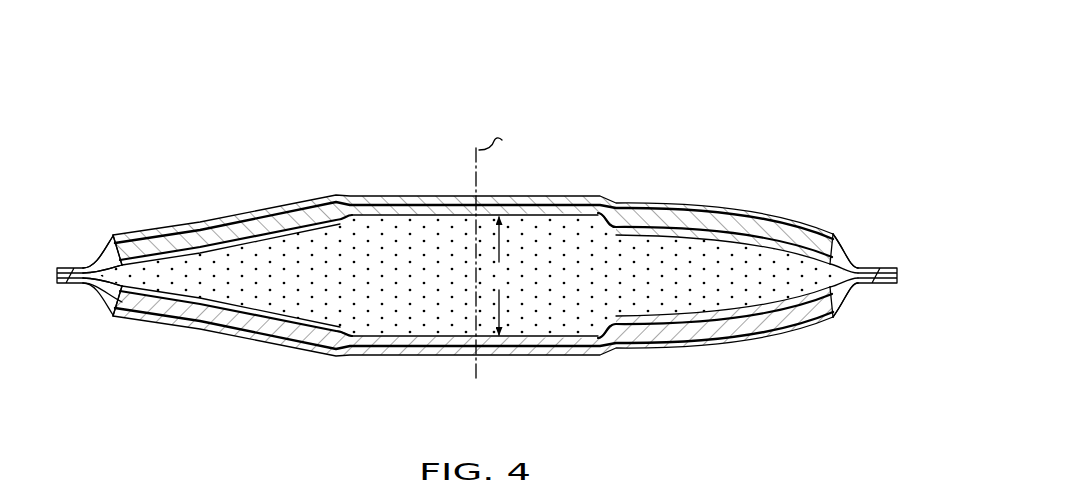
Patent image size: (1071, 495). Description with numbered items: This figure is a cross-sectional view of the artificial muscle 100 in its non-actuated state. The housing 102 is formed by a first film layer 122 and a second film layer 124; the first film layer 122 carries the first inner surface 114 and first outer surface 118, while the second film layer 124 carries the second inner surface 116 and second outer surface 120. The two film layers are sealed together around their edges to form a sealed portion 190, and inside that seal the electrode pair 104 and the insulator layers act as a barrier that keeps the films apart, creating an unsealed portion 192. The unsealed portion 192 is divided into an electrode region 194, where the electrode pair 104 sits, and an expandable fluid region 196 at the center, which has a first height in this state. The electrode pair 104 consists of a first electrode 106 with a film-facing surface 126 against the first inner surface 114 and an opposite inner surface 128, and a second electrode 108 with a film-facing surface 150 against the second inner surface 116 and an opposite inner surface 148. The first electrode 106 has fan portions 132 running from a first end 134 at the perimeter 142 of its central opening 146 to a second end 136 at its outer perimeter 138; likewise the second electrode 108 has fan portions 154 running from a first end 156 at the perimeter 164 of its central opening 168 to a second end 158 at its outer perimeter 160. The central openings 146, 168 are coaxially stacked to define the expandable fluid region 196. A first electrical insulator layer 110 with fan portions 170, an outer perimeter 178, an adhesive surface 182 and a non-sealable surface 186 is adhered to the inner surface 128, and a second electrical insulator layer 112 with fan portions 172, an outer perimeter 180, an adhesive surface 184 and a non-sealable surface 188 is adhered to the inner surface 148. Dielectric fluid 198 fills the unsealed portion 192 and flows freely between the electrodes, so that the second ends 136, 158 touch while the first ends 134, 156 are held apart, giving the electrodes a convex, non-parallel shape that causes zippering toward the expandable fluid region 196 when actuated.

The artificial muscle 100 is at (488, 224).
The housing 102 is at (63, 178).
The electrode pair 104 is at (760, 335).
The first electrode 106 is at (709, 332).
The second electrode 108 is at (769, 234).
The first electrical insulator layer 110 is at (385, 334).
The second electrical insulator layer 112 is at (392, 218).
The first inner surface 114 is at (128, 270).
The second inner surface 116 is at (100, 265).
The first outer surface 118 is at (68, 285).
The second outer surface 120 is at (62, 266).
The first film layer 122 is at (347, 360).
The second film layer 124 is at (388, 192).
The film-facing surface 126 is at (200, 318).
The inner surface 128 is at (153, 305).
The fan portions 132 is at (258, 332).
The first end 134 is at (333, 342).
The second end 136 is at (126, 300).
The outer perimeter 138 is at (104, 299).
The perimeter 142 is at (616, 320).
The central opening 146 is at (385, 358).
The inner surface 148 is at (217, 232).
The film-facing surface 150 is at (233, 228).
The fan portions 154 is at (297, 212).
The first end 156 is at (347, 200).
The second end 158 is at (115, 250).
The outer perimeter 160 is at (108, 243).
The perimeter 164 is at (640, 212).
The central opening 168 is at (436, 210).
The fan portions 170 is at (808, 302).
The fan portions 172 is at (809, 254).
The outer perimeter 178 is at (846, 290).
The outer perimeter 180 is at (850, 261).
The adhesive surface 182 is at (665, 330).
The adhesive surface 184 is at (668, 238).
The non-sealable surface 186 is at (416, 340).
The non-sealable surface 188 is at (577, 214).
The sealed portion 190 is at (900, 275).
The unsealed portion 192 is at (729, 211).
The electrode region 194 is at (637, 362).
The expandable fluid region 196 is at (534, 212).
The dielectric fluid 198 is at (505, 340).